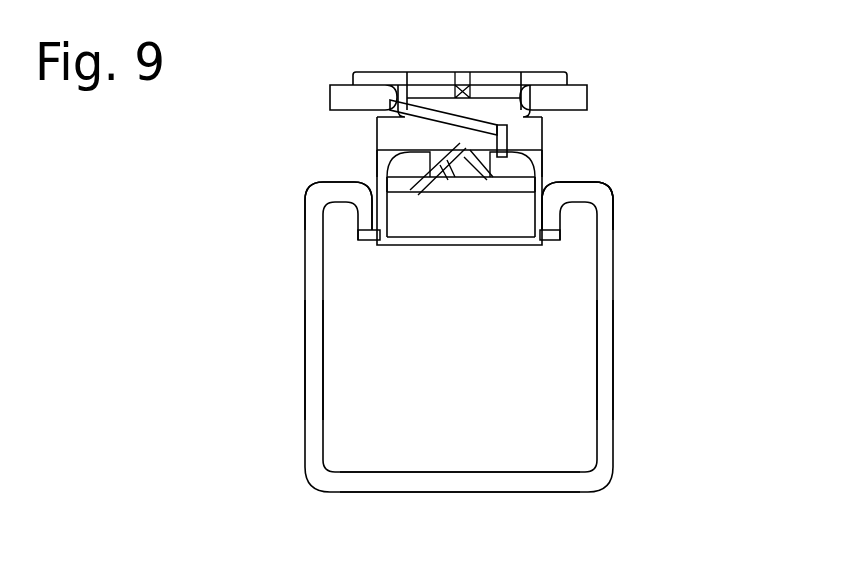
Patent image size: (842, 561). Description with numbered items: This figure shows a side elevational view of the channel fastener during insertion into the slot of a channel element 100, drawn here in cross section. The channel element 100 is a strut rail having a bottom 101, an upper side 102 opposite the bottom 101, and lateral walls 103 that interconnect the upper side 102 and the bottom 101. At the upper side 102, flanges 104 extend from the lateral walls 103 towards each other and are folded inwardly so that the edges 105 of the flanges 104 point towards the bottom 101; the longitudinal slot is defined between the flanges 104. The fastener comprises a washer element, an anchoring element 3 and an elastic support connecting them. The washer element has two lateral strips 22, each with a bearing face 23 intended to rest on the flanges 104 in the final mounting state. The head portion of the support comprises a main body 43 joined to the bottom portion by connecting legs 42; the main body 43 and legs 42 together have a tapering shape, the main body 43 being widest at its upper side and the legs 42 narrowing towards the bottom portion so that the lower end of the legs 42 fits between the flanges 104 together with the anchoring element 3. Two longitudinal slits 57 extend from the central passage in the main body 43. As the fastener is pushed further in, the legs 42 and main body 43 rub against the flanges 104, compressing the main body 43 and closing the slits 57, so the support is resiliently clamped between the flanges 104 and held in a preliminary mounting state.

The anchoring element 3 is at (417, 245).
The lateral strips 22 is at (338, 90).
The bearing face 23 is at (345, 121).
The connecting legs 42 is at (380, 180).
The main body 43 is at (532, 133).
The longitudinal slits 57 is at (448, 137).
The channel element 100 is at (642, 303).
The bottom 101 is at (487, 480).
The upper side 102 is at (621, 168).
The lateral walls 103 is at (315, 338).
The flanges 104 is at (338, 193).
The edges 105 is at (370, 240).